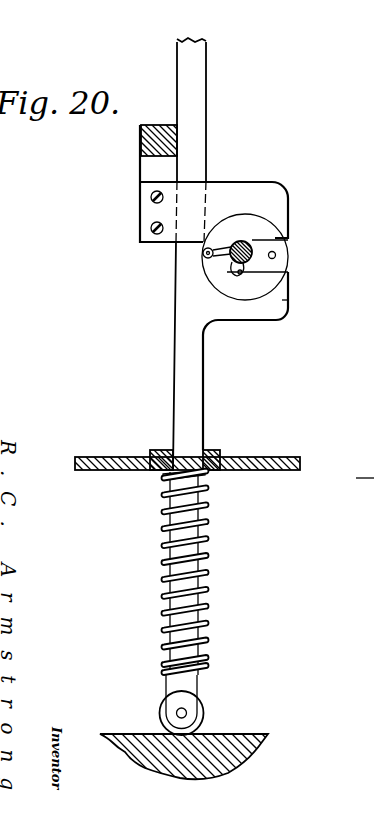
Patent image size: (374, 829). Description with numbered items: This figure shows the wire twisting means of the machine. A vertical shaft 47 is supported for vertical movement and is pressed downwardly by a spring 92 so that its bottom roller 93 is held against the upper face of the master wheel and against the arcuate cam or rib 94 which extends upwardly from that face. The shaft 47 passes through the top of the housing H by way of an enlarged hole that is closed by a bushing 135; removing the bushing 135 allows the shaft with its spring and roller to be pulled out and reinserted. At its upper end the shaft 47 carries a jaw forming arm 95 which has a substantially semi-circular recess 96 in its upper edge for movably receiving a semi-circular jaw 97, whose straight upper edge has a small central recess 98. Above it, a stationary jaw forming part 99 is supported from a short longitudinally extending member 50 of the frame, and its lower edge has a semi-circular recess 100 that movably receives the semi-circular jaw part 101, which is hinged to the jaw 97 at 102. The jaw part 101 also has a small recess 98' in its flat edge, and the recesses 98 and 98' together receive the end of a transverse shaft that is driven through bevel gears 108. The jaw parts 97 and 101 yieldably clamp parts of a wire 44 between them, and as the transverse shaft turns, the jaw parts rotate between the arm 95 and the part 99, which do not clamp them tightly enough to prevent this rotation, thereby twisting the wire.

The shaft 47 is at (194, 397).
The longitudinally extending member 50 is at (140, 147).
The stationary jaw forming part 99 is at (278, 202).
The wire 44 is at (276, 254).
The semi-circular jaw part 101 is at (258, 230).
The semi-circular jaw 97 is at (268, 280).
The jaw forming arm 95 is at (284, 305).
The semi-circular recess 100 is at (244, 214).
The small recess 98' is at (231, 216).
The hinge 102 is at (204, 256).
The bevel gears 108 is at (230, 264).
The small recess 98 is at (216, 292).
The semi-circular recess 96 is at (243, 303).
The housing H is at (256, 462).
The bushing 135 is at (160, 452).
The spring 92 is at (206, 610).
The bottom roller 93 is at (204, 711).
The cam or rib 94 is at (257, 734).